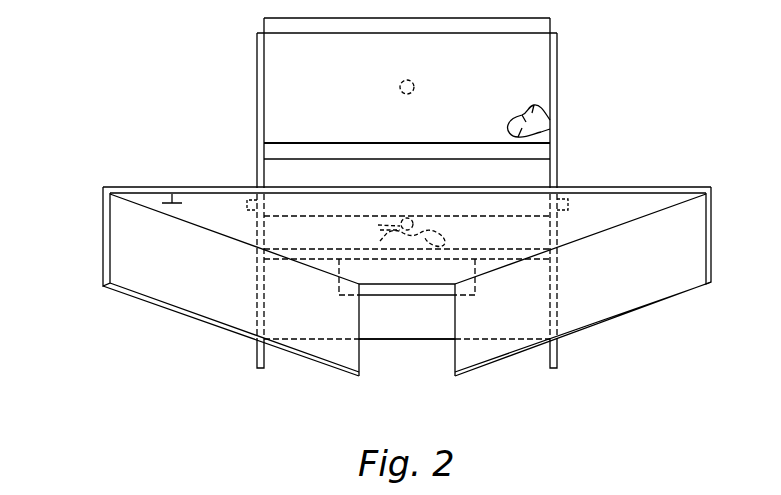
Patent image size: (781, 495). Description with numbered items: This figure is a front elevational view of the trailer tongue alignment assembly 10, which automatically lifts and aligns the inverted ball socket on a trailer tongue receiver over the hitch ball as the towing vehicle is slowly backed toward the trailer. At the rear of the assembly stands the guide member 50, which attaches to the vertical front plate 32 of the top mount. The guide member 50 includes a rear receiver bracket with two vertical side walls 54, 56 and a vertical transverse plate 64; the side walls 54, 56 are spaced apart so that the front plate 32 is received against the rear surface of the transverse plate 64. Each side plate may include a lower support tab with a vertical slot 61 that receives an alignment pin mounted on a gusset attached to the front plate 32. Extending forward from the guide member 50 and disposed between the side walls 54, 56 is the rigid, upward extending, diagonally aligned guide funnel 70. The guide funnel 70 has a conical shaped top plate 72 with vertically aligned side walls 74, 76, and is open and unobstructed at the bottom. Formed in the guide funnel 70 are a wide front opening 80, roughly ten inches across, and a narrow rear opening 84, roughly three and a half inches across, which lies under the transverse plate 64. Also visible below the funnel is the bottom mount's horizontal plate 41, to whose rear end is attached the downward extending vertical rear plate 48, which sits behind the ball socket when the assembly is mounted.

The trailer tongue alignment assembly 10 is at (659, 83).
The guide member 50 is at (250, 59).
The vertical side wall 54 is at (261, 103).
The vertical side wall 56 is at (554, 43).
The vertical transverse plate 64 is at (518, 88).
The vertical front plate 32 is at (536, 127).
The guide funnel 70 is at (130, 187).
The conical shaped top plate 72 is at (172, 194).
The vertical slot 61 is at (248, 200).
The side wall 74 is at (175, 278).
The side wall 76 is at (633, 272).
The wide front opening 80 is at (242, 261).
The horizontal plate 41 is at (430, 295).
The vertical rear plate 48 is at (432, 340).
The narrow rear opening 84 is at (395, 348).